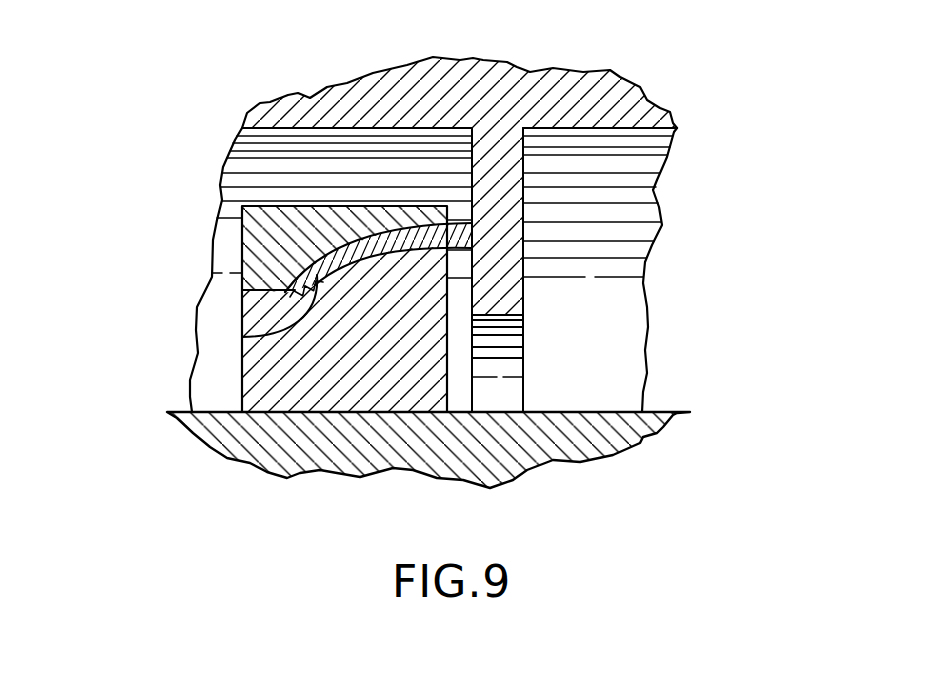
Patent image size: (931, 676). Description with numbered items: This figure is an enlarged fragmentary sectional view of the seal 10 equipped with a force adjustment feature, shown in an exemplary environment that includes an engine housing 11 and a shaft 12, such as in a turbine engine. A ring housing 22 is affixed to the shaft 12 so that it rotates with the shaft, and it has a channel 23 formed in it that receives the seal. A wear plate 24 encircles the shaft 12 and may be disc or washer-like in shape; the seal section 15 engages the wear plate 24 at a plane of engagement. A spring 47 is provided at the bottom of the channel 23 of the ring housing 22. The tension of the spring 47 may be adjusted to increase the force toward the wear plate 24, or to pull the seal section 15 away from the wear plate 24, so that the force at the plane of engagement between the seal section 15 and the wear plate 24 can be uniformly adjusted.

The seal 10 is at (580, 312).
The engine housing 11 is at (620, 88).
The shaft 12 is at (670, 430).
The seal section 15 is at (312, 205).
The ring housing 22 is at (252, 377).
The channel 23 is at (243, 338).
The wear plate 24 is at (508, 222).
The spring 47 is at (291, 293).